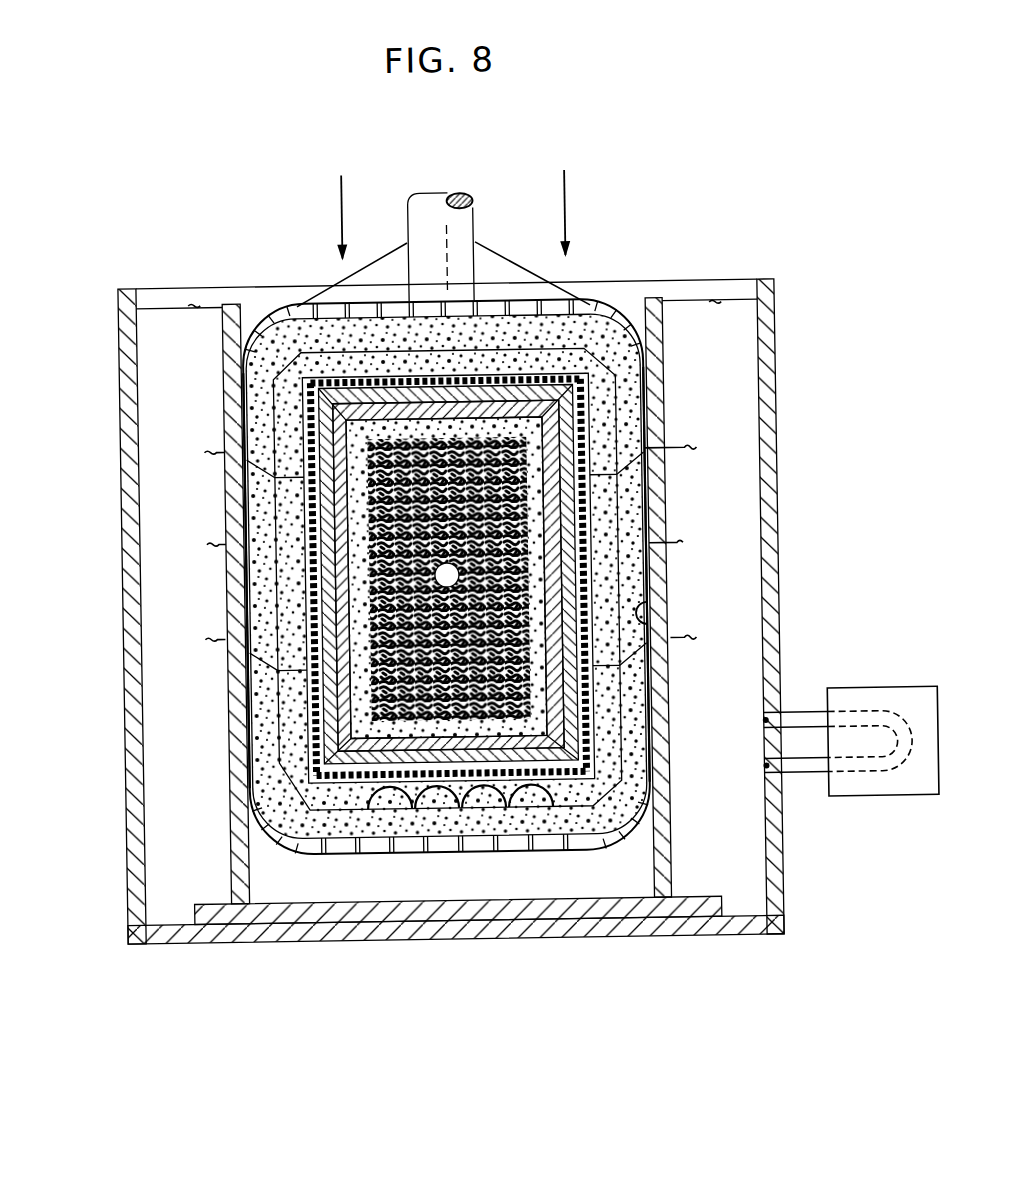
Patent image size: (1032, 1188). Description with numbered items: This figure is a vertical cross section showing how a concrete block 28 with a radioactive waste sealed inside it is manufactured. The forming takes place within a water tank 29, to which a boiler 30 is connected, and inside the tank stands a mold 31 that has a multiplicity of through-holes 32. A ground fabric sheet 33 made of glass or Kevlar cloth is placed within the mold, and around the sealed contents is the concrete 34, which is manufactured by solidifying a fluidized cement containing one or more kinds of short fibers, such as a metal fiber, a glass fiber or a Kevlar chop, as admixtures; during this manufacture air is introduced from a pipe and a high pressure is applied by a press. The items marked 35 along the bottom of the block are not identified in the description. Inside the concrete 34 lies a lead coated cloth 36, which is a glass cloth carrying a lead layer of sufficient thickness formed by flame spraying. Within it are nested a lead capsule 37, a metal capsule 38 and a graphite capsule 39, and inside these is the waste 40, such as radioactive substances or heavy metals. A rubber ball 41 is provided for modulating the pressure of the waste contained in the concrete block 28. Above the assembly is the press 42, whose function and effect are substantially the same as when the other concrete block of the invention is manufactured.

The concrete block 28 is at (631, 526).
The water tank 29 is at (127, 795).
The boiler 30 is at (892, 707).
The mold 31 is at (235, 492).
The through-holes 32 is at (239, 662).
The ground fabric sheet 33 is at (670, 600).
The concrete 34 is at (310, 828).
The heating elements 35 is at (542, 808).
The lead coated cloth 36 is at (312, 705).
The lead capsule 37 is at (308, 410).
The metal capsule 38 is at (307, 591).
The graphite capsule 39 is at (303, 630).
The waste 40 is at (395, 444).
The rubber ball 41 is at (438, 722).
The press 42 is at (446, 228).